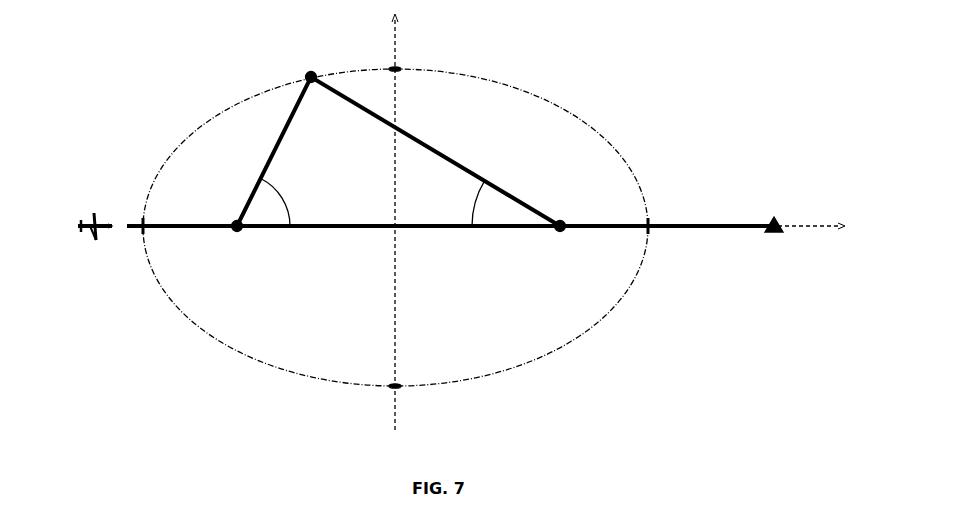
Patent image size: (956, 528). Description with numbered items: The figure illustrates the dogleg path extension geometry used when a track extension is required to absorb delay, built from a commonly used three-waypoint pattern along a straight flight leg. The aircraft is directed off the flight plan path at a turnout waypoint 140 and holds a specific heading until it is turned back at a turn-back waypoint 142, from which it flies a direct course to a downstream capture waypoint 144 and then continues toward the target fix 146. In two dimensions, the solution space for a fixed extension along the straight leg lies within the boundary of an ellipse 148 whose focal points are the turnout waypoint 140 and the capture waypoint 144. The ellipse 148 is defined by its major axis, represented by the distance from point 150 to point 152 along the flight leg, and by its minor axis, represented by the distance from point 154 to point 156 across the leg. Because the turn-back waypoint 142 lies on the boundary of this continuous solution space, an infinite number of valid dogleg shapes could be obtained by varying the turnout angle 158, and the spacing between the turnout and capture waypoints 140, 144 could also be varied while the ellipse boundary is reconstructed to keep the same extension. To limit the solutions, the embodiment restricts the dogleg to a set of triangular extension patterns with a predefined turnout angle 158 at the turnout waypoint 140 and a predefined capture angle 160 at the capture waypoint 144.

The turnout waypoint 140 is at (237, 232).
The turn-back waypoint 142 is at (311, 75).
The capture waypoint 144 is at (559, 232).
The target fix 146 is at (781, 233).
The ellipse 148 is at (567, 108).
The major axis endpoint 150 is at (143, 235).
The major axis endpoint 152 is at (652, 232).
The minor axis endpoint 154 is at (397, 68).
The minor axis endpoint 156 is at (398, 388).
The turnout angle 158 is at (288, 194).
The capture angle 160 is at (472, 201).